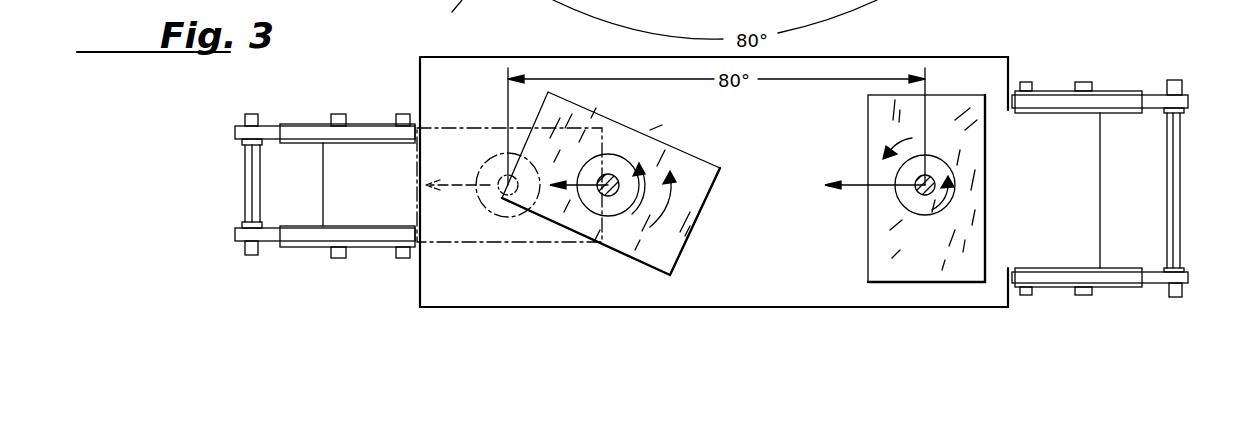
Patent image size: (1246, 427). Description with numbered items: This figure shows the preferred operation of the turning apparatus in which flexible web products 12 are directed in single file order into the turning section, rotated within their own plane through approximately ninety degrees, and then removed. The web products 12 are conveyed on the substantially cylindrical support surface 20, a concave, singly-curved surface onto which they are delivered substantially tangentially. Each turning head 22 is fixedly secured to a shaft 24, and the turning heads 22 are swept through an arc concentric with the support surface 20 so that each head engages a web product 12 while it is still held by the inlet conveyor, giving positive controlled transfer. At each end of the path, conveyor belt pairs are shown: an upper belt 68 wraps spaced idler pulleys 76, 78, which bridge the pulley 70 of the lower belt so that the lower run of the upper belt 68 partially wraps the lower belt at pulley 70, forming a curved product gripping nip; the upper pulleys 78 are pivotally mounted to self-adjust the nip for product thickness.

The flexible web product 12 is at (683, 233).
The substantially cylindrical support surface 20 is at (790, 156).
The turning head 22 is at (635, 177).
The shaft 24 is at (607, 177).
The upper belt 68 is at (275, 133).
The pulley 70 is at (360, 125).
The idler pulley 76 is at (1033, 92).
The upper pulley 78 is at (1183, 90).